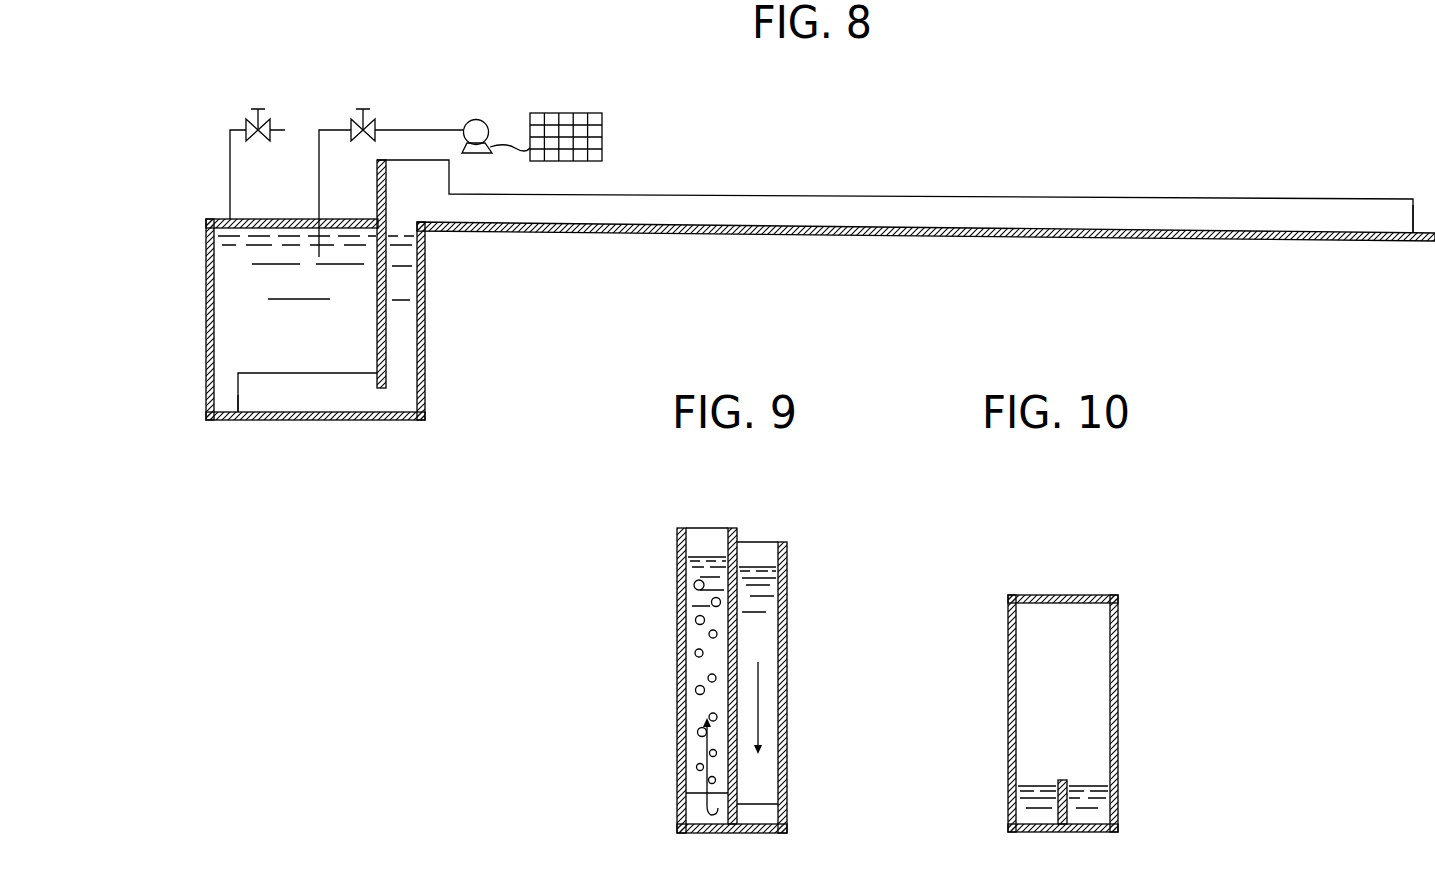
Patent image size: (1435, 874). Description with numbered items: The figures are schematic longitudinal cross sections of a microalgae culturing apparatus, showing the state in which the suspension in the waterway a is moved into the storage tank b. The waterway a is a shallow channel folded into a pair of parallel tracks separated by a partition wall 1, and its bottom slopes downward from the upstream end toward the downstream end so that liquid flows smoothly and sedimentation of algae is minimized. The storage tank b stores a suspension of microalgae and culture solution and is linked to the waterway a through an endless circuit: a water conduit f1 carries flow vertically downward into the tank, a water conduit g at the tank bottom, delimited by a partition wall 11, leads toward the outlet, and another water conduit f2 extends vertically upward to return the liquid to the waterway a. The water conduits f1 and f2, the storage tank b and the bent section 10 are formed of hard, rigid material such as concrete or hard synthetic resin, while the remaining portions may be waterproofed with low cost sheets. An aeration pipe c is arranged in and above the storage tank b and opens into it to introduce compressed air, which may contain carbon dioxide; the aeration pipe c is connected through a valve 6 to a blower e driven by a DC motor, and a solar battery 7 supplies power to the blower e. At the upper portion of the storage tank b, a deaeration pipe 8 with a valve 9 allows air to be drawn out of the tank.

In FIG. 8, the partition wall 1 is at (1148, 207).
In FIG. 9, the partition wall 1 is at (732, 527).
In FIG. 8, the valve 6 is at (364, 117).
In FIG. 8, the solar battery 7 is at (580, 114).
In FIG. 8, the deaeration pipe 8 is at (231, 158).
In FIG. 8, the valve 9 is at (260, 117).
In FIG. 8, the bent section 10 is at (1434, 178).
In FIG. 8, the partition wall 11 is at (277, 372).
In FIG. 10, the partition wall 11 is at (1077, 808).
In FIG. 8, the waterway a is at (941, 238).
In FIG. 8, the storage tank b is at (255, 273).
In FIG. 10, the storage tank b is at (1075, 716).
In FIG. 8, the aeration pipe c is at (319, 163).
In FIG. 8, the blower e is at (486, 126).
In FIG. 8, the water conduit g is at (224, 393).
In FIG. 9, the water conduit f1 is at (768, 690).
In FIG. 8, the water conduit f2 is at (403, 310).
In FIG. 9, the water conduit f2 is at (697, 698).